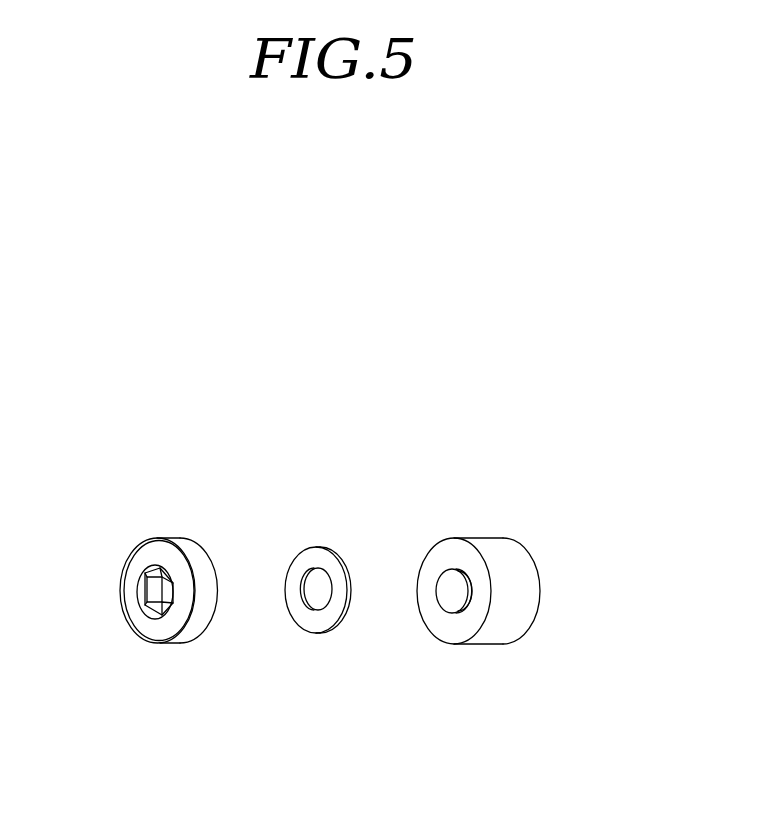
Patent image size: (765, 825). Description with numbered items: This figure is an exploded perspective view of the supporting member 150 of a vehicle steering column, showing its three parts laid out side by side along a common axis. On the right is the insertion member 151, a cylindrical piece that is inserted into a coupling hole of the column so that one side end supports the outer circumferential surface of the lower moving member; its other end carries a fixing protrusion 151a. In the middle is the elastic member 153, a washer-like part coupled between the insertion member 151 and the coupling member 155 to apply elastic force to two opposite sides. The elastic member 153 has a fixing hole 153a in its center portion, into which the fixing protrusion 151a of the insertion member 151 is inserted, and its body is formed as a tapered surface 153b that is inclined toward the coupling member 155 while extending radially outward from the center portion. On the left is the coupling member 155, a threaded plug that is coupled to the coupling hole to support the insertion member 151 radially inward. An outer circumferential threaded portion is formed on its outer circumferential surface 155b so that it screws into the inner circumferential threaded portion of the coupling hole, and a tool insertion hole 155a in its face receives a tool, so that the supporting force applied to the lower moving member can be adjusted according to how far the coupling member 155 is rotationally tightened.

The supporting member 150 is at (145, 398).
The insertion member 151 is at (484, 536).
The fixing protrusion 151a is at (452, 592).
The elastic member 153 is at (321, 540).
The fixing hole 153a is at (306, 596).
The tapered surface 153b is at (302, 606).
The coupling member 155 is at (175, 523).
The tool insertion hole 155a is at (148, 590).
The outer circumferential surface 155b is at (193, 555).